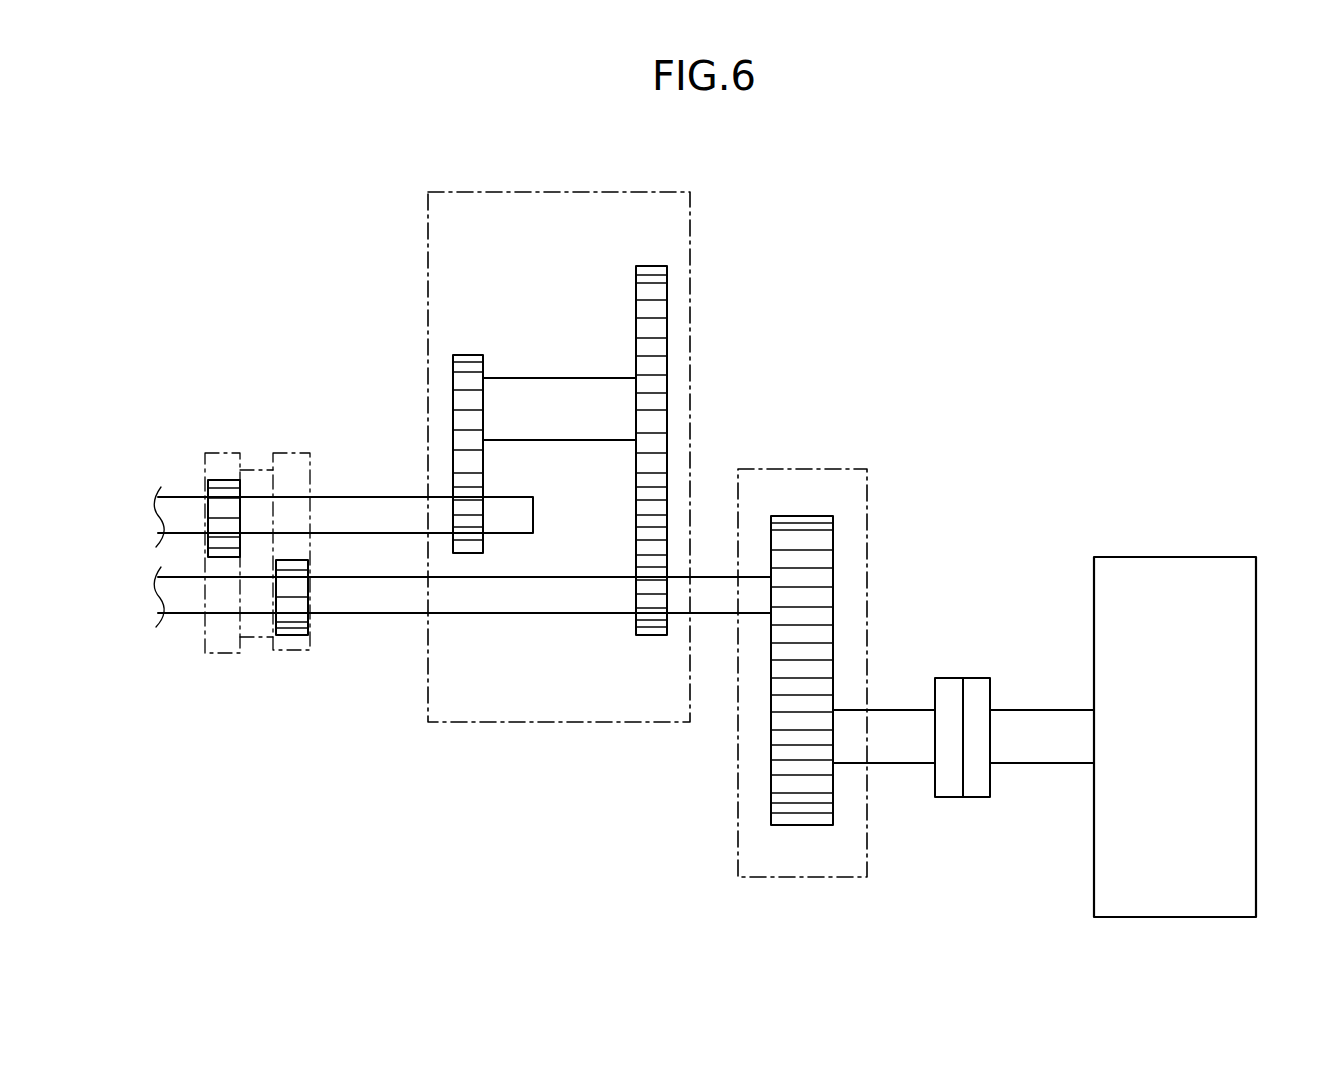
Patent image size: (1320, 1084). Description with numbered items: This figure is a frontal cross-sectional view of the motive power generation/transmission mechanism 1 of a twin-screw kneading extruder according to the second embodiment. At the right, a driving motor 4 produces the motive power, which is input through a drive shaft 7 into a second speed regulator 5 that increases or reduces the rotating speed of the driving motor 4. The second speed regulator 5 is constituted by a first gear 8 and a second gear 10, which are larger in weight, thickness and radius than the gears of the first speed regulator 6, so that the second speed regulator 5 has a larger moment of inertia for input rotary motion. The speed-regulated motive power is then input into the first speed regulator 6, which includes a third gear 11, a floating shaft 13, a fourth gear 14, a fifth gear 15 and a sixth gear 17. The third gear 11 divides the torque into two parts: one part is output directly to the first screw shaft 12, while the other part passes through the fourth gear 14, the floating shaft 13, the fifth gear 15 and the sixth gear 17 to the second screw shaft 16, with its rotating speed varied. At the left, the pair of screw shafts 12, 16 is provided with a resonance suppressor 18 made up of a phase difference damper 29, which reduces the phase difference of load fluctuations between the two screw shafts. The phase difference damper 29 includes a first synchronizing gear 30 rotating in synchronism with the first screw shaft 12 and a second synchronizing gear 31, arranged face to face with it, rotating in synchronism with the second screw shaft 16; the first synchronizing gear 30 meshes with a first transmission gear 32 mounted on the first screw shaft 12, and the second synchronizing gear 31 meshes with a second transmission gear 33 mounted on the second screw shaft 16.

The motive power generation/transmission mechanism 1 is at (877, 261).
The driving motor 4 is at (1128, 568).
The second speed regulator 5 is at (868, 555).
The first speed regulator 6 is at (637, 192).
The drive shaft 7 is at (1027, 737).
The first gear 8 is at (825, 690).
The second gear 10 is at (806, 515).
The third gear 11 is at (663, 567).
The first screw shaft 12 is at (377, 611).
The floating shaft 13 is at (552, 392).
The fourth gear 14 is at (661, 310).
The fifth gear 15 is at (462, 385).
The second screw shaft 16 is at (360, 505).
The sixth gear 17 is at (468, 548).
The resonance suppressor 18 is at (257, 538).
The phase difference damper 29 is at (205, 650).
The first synchronizing gear 30 is at (305, 657).
The second synchronizing gear 31 is at (233, 450).
The first transmission gear 32 is at (278, 622).
The second transmission gear 33 is at (207, 497).